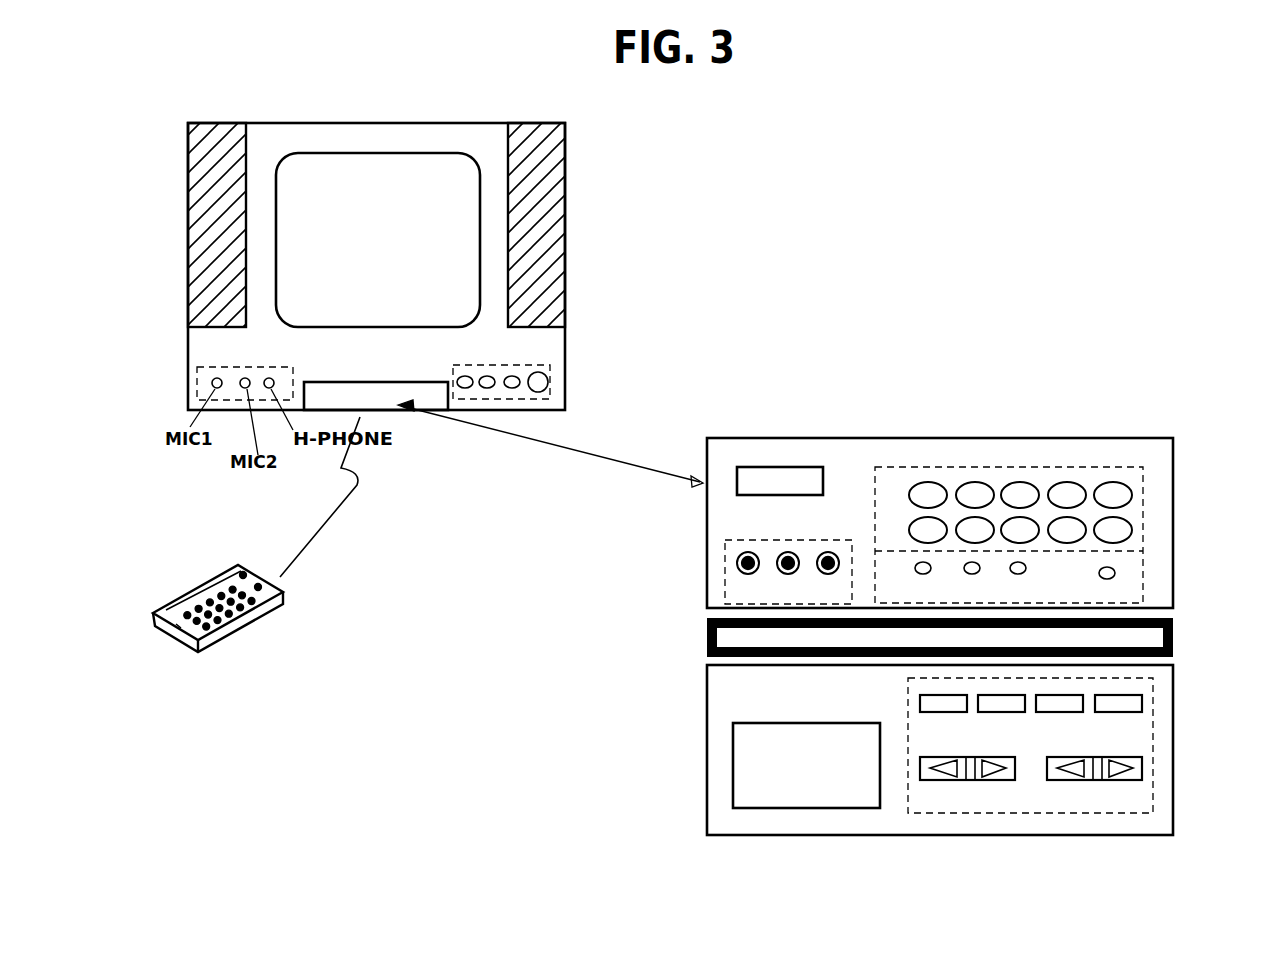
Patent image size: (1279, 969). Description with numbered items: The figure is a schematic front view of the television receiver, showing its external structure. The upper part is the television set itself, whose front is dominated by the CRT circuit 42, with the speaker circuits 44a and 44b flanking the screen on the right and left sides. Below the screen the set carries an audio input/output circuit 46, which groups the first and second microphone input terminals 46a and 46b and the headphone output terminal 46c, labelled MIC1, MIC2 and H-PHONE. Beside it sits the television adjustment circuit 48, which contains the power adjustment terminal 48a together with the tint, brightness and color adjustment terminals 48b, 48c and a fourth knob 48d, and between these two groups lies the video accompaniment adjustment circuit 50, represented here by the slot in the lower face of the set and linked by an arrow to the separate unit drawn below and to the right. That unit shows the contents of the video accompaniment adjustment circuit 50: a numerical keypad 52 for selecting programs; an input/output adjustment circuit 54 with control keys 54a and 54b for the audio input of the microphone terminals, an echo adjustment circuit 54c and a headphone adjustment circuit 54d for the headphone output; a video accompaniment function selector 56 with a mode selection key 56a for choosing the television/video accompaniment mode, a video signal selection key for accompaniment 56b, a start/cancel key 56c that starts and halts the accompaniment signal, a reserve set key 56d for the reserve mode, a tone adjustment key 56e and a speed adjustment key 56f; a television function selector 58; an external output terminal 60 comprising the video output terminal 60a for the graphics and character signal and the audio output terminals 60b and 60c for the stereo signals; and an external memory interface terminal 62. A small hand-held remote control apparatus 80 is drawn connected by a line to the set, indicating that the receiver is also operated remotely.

The CRT circuit 42 is at (378, 183).
The speaker circuit 44a is at (545, 220).
The speaker circuit 44b is at (218, 132).
The audio input/output circuit 46 is at (197, 380).
The first microphone input terminal 46a is at (216, 378).
The second microphone input terminal 46b is at (245, 378).
The headphone output terminal 46c is at (272, 379).
The television adjustment circuit 48 is at (552, 392).
The power adjustment terminal 48a is at (548, 373).
The brightness adjustment terminal 48b is at (464, 375).
The color adjustment terminal 48c is at (489, 375).
The control knob 48d is at (514, 375).
The video accompaniment adjustment circuit 50 is at (432, 398).
The numeric keypad 52 is at (1025, 467).
The input/output adjustment circuit 54 is at (1145, 595).
The control key 54a is at (933, 563).
The control key 54b is at (980, 569).
The echo adjustment circuit 54c is at (1027, 566).
The headphone adjustment circuit 54d is at (1117, 577).
The video accompaniment function selector 56 is at (1012, 813).
The mode selection key 56a is at (962, 693).
The video signal selection key for accompaniment 56b is at (1142, 698).
The start/cancel key 56c is at (1060, 712).
The operation key 56d is at (1133, 713).
The tone adjustment key 56e is at (923, 780).
The speed adjustment key 56f is at (1133, 780).
The television function selector 58 is at (773, 808).
The external output terminal 60 is at (725, 560).
The video output terminal 60a is at (748, 552).
The audio output terminal 60b is at (788, 552).
The audio output terminal 60c is at (828, 552).
The external memory interface terminal 62 is at (790, 467).
The remote controller 80 is at (240, 628).